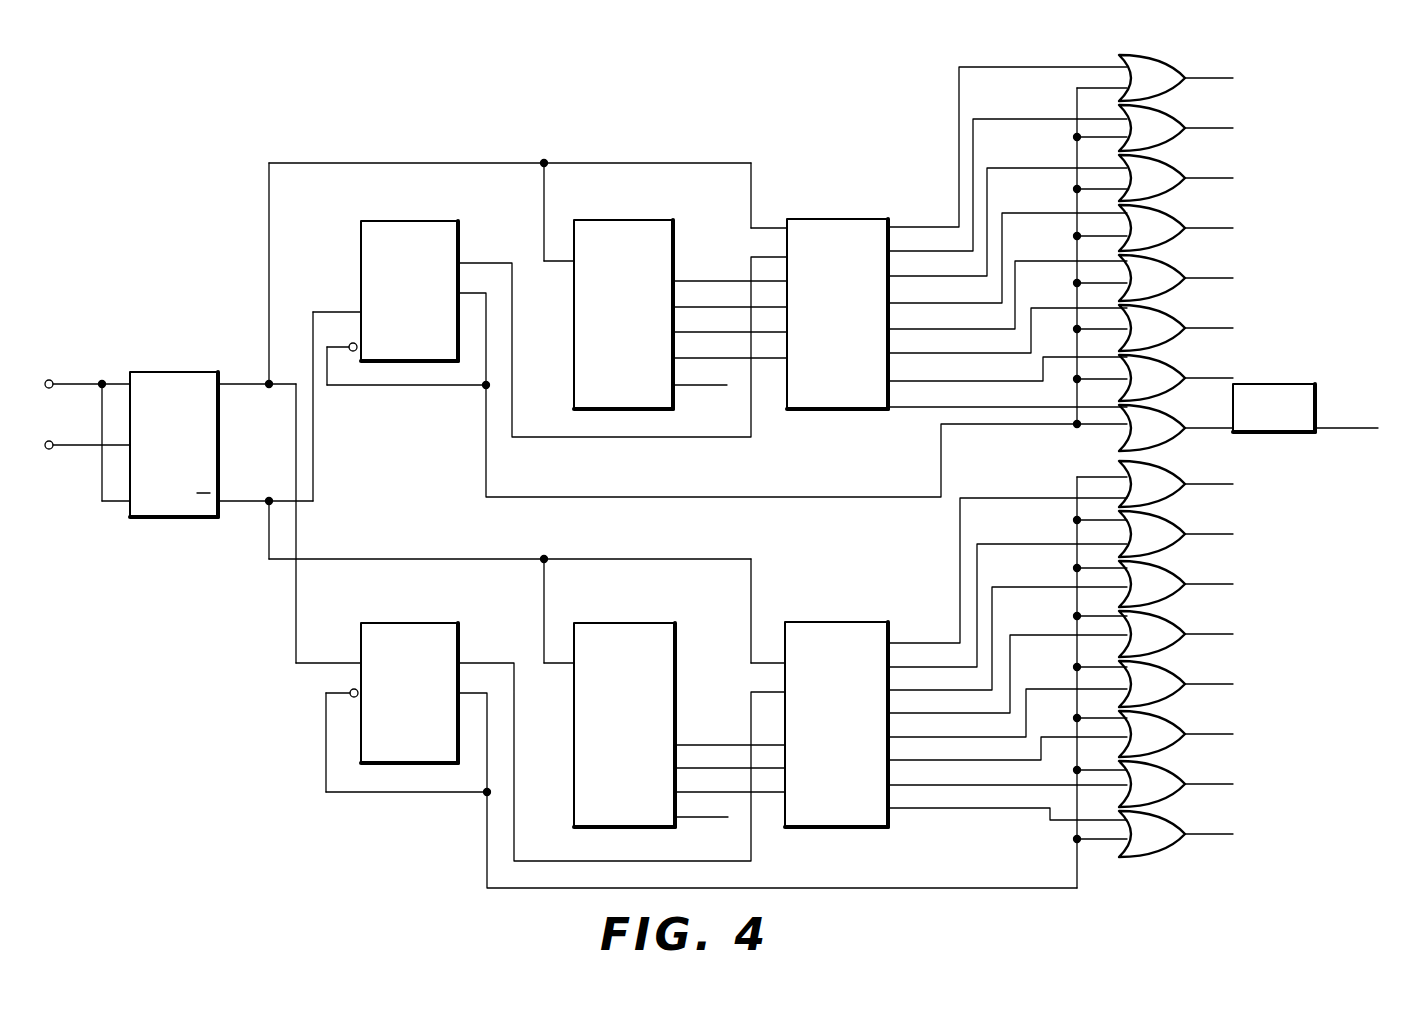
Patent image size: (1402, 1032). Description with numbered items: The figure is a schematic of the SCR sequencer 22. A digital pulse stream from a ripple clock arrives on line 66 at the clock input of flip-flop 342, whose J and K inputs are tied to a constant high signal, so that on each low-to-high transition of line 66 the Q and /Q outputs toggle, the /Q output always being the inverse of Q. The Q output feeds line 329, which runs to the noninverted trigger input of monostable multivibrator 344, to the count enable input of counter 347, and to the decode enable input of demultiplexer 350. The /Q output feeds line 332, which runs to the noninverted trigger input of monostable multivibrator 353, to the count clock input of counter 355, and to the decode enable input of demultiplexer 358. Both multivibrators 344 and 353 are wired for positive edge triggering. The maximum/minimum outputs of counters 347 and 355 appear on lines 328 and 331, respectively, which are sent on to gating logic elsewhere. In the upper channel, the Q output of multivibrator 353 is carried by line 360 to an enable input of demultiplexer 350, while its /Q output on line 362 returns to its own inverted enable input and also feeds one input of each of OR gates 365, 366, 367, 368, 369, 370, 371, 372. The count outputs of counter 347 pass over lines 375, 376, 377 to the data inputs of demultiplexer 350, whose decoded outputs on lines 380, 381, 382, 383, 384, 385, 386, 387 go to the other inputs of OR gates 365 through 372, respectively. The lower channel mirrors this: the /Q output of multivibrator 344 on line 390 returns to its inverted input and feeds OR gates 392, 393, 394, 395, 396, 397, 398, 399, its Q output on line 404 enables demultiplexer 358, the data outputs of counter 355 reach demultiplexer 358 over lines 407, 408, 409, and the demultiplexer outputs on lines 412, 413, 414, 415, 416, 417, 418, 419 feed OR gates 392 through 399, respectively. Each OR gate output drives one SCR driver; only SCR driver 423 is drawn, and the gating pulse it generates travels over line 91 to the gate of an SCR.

The SCR sequencer 22 is at (336, 849).
The line 66 is at (82, 445).
The line 91 is at (1335, 427).
The line 328 is at (694, 369).
The line 329 is at (246, 383).
The line 331 is at (694, 801).
The line 332 is at (240, 505).
The flip-flop 342 is at (180, 372).
The monostable multivibrator 344 is at (383, 662).
The counter 347 is at (598, 261).
The demultiplexer 350 is at (813, 257).
The monostable multivibrator 353 is at (422, 262).
The counter 355 is at (599, 661).
The demultiplexer 358 is at (812, 657).
The line 360 is at (474, 262).
The line 362 is at (490, 312).
The OR gate 365 is at (1150, 65).
The OR gate 366 is at (1150, 115).
The OR gate 367 is at (1150, 165).
The OR gate 368 is at (1150, 215).
The OR gate 369 is at (1150, 265).
The OR gate 370 is at (1150, 315).
The OR gate 371 is at (1150, 365).
The OR gate 372 is at (1150, 415).
The line 375 is at (690, 291).
The line 376 is at (694, 317).
The line 377 is at (694, 342).
The line 380 is at (897, 226).
The line 381 is at (897, 250).
The line 382 is at (897, 275).
The line 383 is at (897, 302).
The line 384 is at (897, 328).
The line 385 is at (897, 352).
The line 386 is at (897, 380).
The line 387 is at (897, 406).
The line 390 is at (504, 689).
The OR gate 392 is at (1150, 481).
The OR gate 393 is at (1150, 522).
The OR gate 394 is at (1150, 572).
The OR gate 395 is at (1150, 622).
The OR gate 396 is at (1150, 672).
The OR gate 397 is at (1150, 721).
The OR gate 398 is at (1150, 771).
The OR gate 399 is at (1150, 822).
The line 404 is at (470, 660).
The line 407 is at (694, 729).
The line 408 is at (694, 753).
The line 409 is at (694, 777).
The line 412 is at (897, 642).
The line 413 is at (897, 666).
The line 414 is at (897, 689).
The line 415 is at (897, 712).
The line 416 is at (897, 736).
The line 417 is at (897, 759).
The line 418 is at (897, 784).
The line 419 is at (897, 807).
The SCR driver 423 is at (1255, 419).